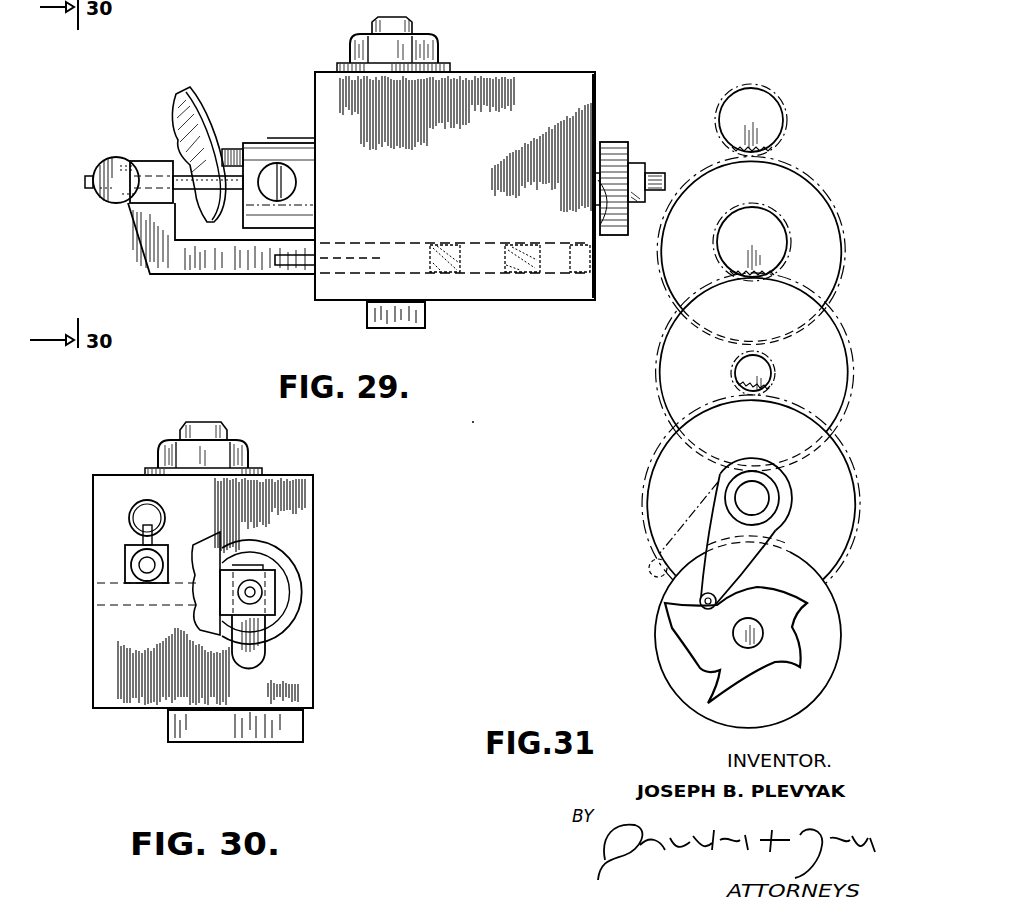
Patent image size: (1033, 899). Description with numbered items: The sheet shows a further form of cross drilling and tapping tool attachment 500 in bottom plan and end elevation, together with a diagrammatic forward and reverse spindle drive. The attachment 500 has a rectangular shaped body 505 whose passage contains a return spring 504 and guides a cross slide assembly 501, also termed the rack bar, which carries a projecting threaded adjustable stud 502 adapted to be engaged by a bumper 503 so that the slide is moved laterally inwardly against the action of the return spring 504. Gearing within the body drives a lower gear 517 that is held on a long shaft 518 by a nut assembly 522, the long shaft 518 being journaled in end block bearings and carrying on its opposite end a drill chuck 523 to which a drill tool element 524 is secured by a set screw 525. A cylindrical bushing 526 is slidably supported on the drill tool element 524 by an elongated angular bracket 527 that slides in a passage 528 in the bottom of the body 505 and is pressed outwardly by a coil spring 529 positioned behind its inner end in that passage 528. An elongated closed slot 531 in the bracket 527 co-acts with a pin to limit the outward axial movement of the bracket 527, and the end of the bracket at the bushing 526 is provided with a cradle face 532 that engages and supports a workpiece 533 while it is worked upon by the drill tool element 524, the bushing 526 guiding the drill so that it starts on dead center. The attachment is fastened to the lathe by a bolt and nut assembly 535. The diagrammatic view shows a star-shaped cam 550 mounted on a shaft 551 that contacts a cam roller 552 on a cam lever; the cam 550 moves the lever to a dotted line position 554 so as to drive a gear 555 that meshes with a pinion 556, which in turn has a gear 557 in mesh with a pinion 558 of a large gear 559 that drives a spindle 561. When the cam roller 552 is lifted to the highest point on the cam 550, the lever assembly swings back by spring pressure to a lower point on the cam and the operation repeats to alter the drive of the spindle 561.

In FIG. 29, the cross drilling and tapping tool attachment 500 is at (497, 170).
In FIG. 30, the cross drilling and tapping tool attachment 500 is at (340, 426).
In FIG. 30, the cross slide assembly 501 is at (147, 566).
In FIG. 29, the threaded adjustable stud 502 is at (232, 149).
In FIG. 29, the bumper 503 is at (192, 110).
In FIG. 30, the return spring 504 is at (132, 518).
In FIG. 29, the body 505 is at (520, 95).
In FIG. 29, the lower gear 517 is at (620, 148).
In FIG. 29, the long shaft 518 is at (598, 182).
In FIG. 29, the nut assembly 522 is at (641, 175).
In FIG. 29, the drill chuck 523 is at (250, 150).
In FIG. 29, the drill tool element 524 is at (212, 187).
In FIG. 30, the drill tool element 524 is at (250, 595).
In FIG. 29, the set screw 525 is at (283, 175).
In FIG. 29, the cylindrical bushing 526 is at (153, 163).
In FIG. 30, the cylindrical bushing 526 is at (268, 590).
In FIG. 29, the angular bracket 527 is at (225, 262).
In FIG. 30, the angular bracket 527 is at (253, 655).
In FIG. 29, the passage 528 is at (402, 262).
In FIG. 29, the coil spring 529 is at (497, 285).
In FIG. 29, the closed slot 531 is at (292, 262).
In FIG. 29, the cradle face 532 is at (122, 168).
In FIG. 29, the workpiece 533 is at (100, 174).
In FIG. 29, the bolt and nut assembly 535 is at (428, 22).
In FIG. 30, the bolt and nut assembly 535 is at (178, 445).
In FIG. 31, the cam 550 is at (700, 632).
In FIG. 31, the shaft 551 is at (745, 638).
In FIG. 31, the cam roller 552 is at (700, 632).
In FIG. 31, the dotted line position 554 is at (683, 530).
In FIG. 31, the gear 555 is at (668, 450).
In FIG. 31, the pinion 556 is at (740, 371).
In FIG. 31, the gear 557 is at (682, 322).
In FIG. 31, the pinion 558 is at (762, 235).
In FIG. 31, the large gear 559 is at (770, 185).
In FIG. 31, the spindle 561 is at (766, 115).